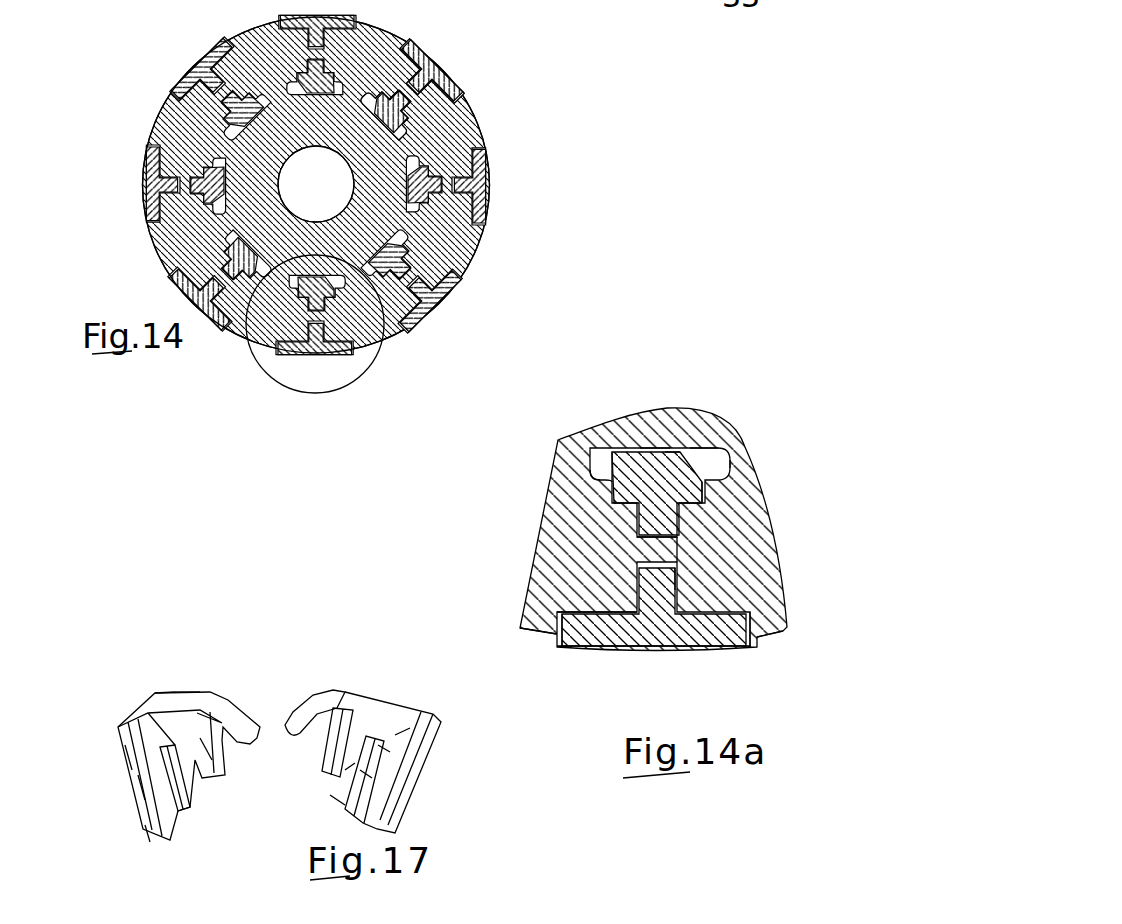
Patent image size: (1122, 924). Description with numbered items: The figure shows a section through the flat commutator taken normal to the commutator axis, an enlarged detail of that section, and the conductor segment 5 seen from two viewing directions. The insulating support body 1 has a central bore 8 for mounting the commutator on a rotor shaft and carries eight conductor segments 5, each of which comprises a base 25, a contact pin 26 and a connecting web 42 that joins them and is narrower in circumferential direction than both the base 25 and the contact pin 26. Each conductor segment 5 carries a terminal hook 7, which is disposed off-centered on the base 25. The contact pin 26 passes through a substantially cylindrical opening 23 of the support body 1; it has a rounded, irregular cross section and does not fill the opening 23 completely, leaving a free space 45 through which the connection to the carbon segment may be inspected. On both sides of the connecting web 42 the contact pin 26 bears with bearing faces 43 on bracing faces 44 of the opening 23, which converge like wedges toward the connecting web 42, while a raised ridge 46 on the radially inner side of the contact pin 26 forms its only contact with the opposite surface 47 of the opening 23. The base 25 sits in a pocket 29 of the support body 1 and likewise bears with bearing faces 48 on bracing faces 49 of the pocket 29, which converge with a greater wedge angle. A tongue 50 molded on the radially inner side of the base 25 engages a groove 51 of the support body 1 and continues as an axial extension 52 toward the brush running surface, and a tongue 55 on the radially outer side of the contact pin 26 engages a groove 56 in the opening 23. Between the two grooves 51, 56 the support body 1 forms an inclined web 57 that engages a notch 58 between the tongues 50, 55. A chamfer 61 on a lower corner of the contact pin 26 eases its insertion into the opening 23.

In FIG. 14, the support body 1 is at (463, 240).
In FIG. 14A, the support body 1 is at (575, 442).
In FIG. 14, the conductor segment 5 is at (195, 49).
In FIG. 14A, the conductor segment 5 is at (755, 638).
In FIG. 17, the conductor segment 5 is at (155, 662).
In FIG. 17, the hook 7 is at (252, 720).
In FIG. 14, the central bore 8 is at (335, 180).
In FIG. 14A, the opening 23 is at (720, 455).
In FIG. 14, the base 25 is at (480, 193).
In FIG. 14A, the base 25 is at (606, 590).
In FIG. 17, the base 25 is at (190, 703).
In FIG. 14, the contact pin 26 is at (440, 95).
In FIG. 14A, the contact pin 26 is at (655, 447).
In FIG. 17, the contact pin 26 is at (128, 757).
In FIG. 14A, the pocket 29 is at (568, 630).
In FIG. 17, the connecting web 42 is at (162, 725).
In FIG. 14A, the bearing faces 43 is at (615, 503).
In FIG. 17, the bearing faces 43 is at (403, 738).
In FIG. 14A, the bracing faces 44 is at (617, 477).
In FIG. 14A, the free space 45 is at (703, 447).
In FIG. 14A, the raised ridge 46 is at (617, 447).
In FIG. 17, the raised ridge 46 is at (143, 785).
In FIG. 14A, the surface 47 is at (675, 447).
In FIG. 14A, the bearing faces 48 is at (603, 593).
In FIG. 17, the bearing faces 48 is at (200, 738).
In FIG. 14A, the bracing faces 49 is at (620, 622).
In FIG. 14A, the tongue 50 is at (723, 618).
In FIG. 17, the tongue 50 is at (355, 762).
In FIG. 14A, the groove 51 is at (687, 577).
In FIG. 17, the axial extension 52 is at (338, 797).
In FIG. 14A, the tongue 55 is at (650, 537).
In FIG. 17, the tongue 55 is at (383, 760).
In FIG. 14A, the groove 56 is at (713, 482).
In FIG. 14A, the web 57 is at (685, 540).
In FIG. 17, the notch 58 is at (367, 773).
In FIG. 17, the chamfer 61 is at (143, 833).